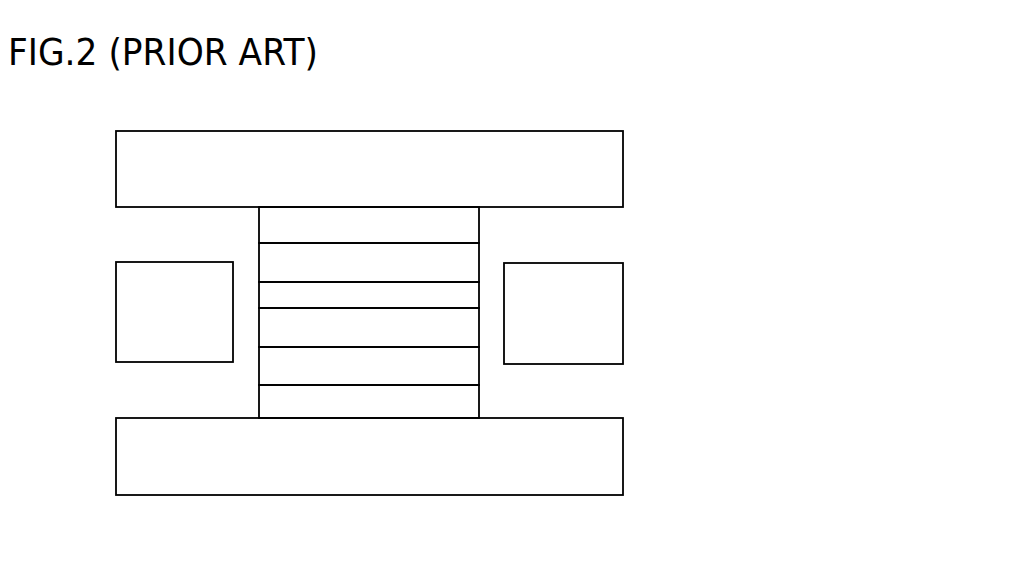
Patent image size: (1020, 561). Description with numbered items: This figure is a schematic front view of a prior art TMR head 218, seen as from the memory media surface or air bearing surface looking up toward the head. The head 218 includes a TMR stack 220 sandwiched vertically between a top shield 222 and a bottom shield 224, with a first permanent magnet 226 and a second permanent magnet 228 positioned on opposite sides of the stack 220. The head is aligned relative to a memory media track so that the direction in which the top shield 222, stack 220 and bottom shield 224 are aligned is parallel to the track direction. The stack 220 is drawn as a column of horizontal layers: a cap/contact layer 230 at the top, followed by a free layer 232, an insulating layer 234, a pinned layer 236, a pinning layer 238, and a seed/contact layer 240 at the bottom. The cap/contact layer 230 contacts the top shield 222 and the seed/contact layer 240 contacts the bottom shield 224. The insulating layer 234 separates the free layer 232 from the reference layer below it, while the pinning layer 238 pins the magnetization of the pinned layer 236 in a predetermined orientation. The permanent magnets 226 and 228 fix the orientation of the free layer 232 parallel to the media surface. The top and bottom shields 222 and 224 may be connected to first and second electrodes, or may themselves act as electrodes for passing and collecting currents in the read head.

The TMR head 218 is at (598, 100).
The TMR stack 220 is at (258, 383).
The top shield 222 is at (125, 170).
The bottom shield 224 is at (145, 483).
The first permanent magnet 226 is at (126, 314).
The second permanent magnet 228 is at (611, 297).
The cap/contact layer 230 is at (450, 219).
The free layer 232 is at (465, 262).
The insulating layer 234 is at (268, 295).
The pinned layer 236 is at (468, 325).
The pinning layer 238 is at (268, 357).
The seed/contact layer 240 is at (467, 405).